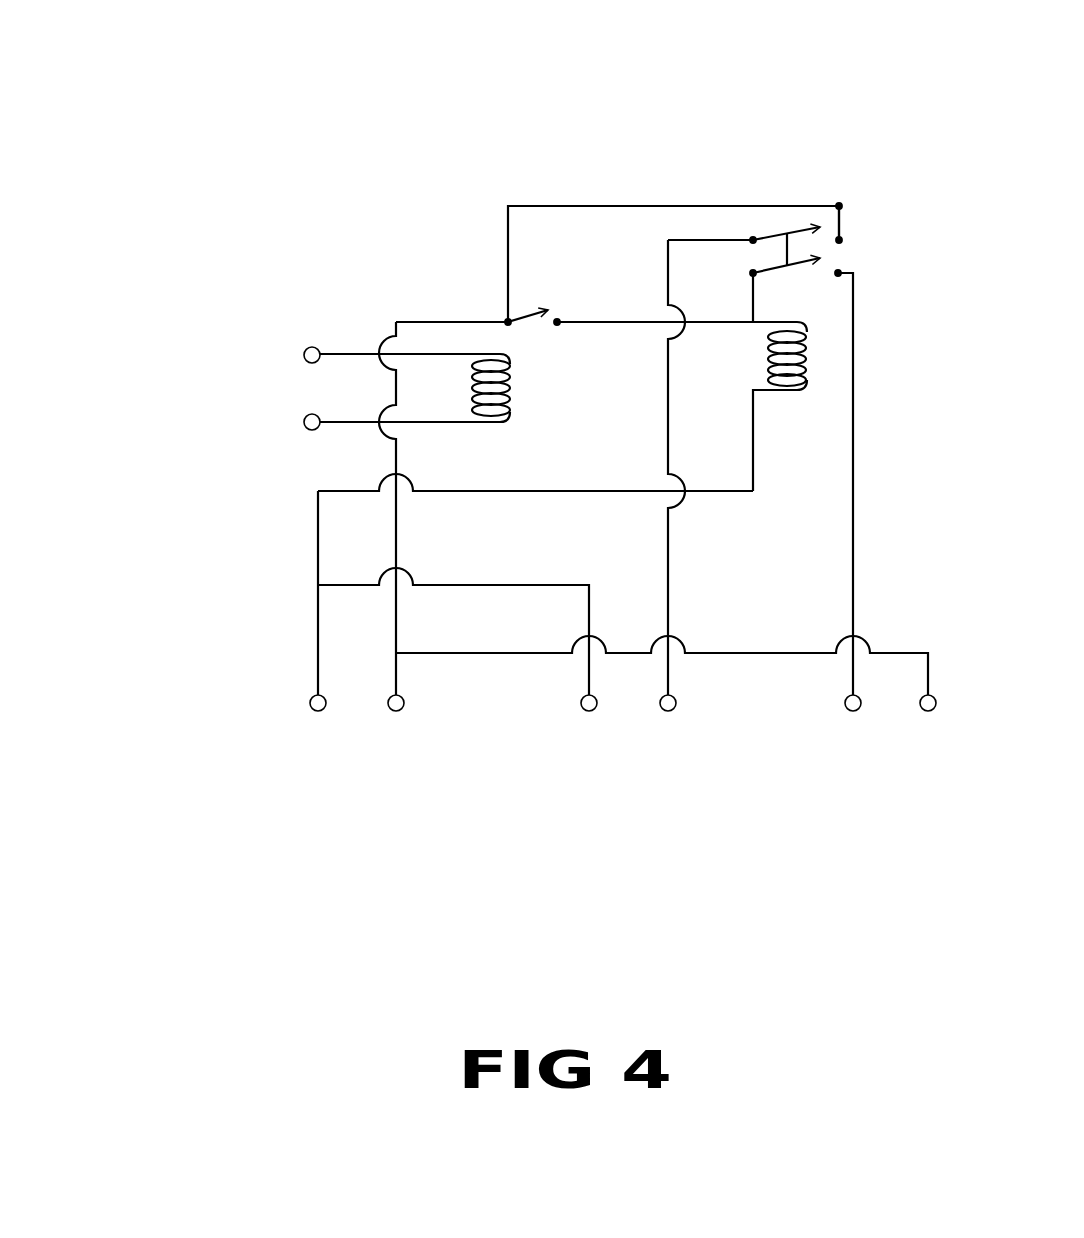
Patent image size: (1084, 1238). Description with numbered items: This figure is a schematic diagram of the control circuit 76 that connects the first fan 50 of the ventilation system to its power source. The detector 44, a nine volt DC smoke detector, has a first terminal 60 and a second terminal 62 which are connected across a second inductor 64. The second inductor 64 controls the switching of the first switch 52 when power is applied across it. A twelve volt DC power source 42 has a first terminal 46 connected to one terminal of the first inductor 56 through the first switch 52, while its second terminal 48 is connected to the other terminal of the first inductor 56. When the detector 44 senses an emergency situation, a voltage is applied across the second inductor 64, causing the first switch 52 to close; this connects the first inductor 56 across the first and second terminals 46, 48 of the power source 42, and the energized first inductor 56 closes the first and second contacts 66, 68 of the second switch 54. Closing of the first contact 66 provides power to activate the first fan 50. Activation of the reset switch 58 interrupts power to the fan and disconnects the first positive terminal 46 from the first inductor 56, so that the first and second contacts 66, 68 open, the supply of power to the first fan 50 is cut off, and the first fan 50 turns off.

The control circuit 76 is at (623, 353).
The second switch 54 is at (797, 218).
The first contact 66 is at (787, 230).
The second contact 68 is at (767, 273).
The first switch 52 is at (534, 297).
The first inductor 56 is at (767, 358).
The second inductor 64 is at (507, 388).
The first terminal 60 is at (292, 359).
The second terminal 62 is at (292, 427).
The detector 44 is at (199, 416).
The 12 volt DC power source 42 is at (356, 764).
The first terminal 46 is at (391, 722).
The second terminal 48 is at (316, 722).
The first fan 50 is at (637, 765).
The reset switch 58 is at (885, 766).